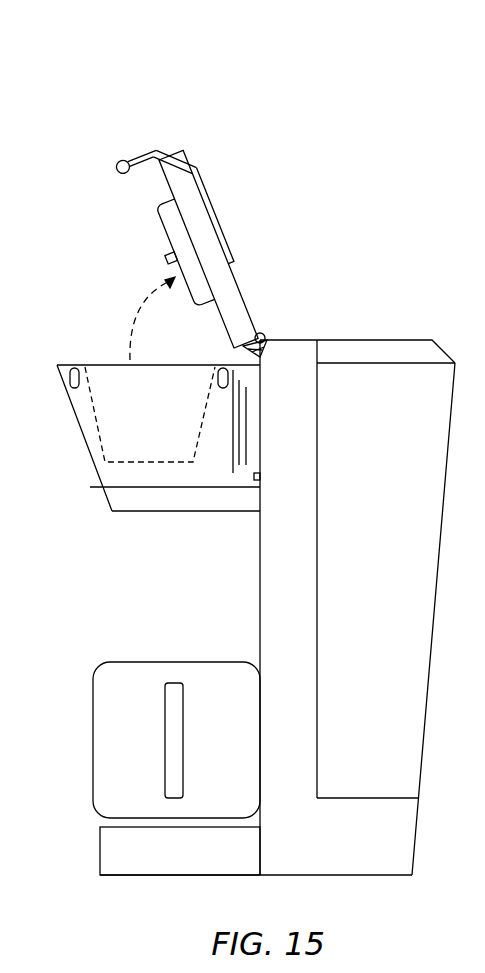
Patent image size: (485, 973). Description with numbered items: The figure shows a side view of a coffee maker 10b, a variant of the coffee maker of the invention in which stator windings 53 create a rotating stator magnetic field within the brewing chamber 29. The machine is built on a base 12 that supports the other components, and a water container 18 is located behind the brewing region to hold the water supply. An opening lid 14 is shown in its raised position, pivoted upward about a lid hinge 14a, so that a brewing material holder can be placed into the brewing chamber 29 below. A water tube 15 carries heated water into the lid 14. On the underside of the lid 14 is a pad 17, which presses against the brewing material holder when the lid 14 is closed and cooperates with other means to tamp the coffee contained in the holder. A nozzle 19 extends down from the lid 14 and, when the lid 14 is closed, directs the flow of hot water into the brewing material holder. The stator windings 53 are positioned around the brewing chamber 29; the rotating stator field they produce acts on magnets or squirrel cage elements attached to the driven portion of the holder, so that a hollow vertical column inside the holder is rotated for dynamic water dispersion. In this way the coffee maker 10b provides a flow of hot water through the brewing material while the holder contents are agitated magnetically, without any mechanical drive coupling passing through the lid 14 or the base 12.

The coffee maker 10b is at (383, 282).
The base 12 is at (283, 457).
The opening lid 14 is at (230, 292).
The lid hinge 14a is at (262, 333).
The water tube 15 is at (272, 339).
The pad 17 is at (170, 222).
The water container 18 is at (359, 519).
The nozzle 19 is at (164, 256).
The brewing chamber 29 is at (128, 414).
The stator windings 53 is at (73, 368).